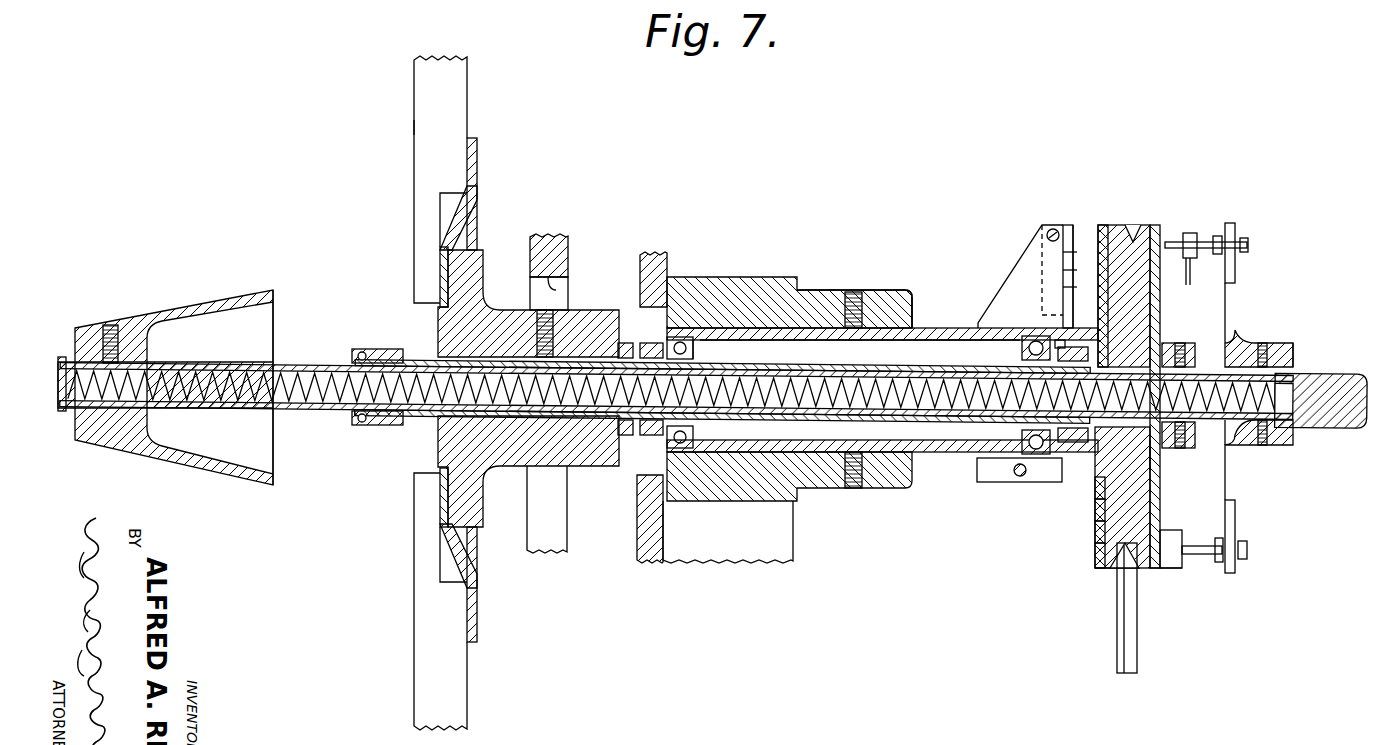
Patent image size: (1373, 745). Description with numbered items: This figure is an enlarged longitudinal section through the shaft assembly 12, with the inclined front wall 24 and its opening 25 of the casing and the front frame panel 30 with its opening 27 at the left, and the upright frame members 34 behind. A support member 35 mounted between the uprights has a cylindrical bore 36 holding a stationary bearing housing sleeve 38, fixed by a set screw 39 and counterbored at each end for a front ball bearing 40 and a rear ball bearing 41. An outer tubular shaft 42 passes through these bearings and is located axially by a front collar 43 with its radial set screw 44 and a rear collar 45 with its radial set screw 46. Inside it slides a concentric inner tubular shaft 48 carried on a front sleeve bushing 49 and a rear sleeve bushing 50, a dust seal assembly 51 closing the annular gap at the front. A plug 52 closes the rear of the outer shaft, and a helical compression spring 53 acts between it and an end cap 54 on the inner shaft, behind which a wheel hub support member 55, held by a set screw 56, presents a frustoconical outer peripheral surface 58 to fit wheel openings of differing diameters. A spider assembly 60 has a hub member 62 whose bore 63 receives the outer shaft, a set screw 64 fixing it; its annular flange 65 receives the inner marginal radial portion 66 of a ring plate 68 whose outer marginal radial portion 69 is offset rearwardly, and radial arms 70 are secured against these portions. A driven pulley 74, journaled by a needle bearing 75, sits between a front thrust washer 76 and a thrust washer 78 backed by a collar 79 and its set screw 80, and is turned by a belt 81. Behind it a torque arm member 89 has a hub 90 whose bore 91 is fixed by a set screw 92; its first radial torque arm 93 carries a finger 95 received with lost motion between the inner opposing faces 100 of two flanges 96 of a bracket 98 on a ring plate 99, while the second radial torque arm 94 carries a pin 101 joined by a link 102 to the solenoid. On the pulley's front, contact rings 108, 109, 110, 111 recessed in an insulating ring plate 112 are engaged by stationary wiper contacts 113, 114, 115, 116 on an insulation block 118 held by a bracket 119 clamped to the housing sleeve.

The shaft assembly 12 is at (895, 290).
The front wall 24 is at (560, 251).
The opening 25 is at (556, 290).
The opening 27 is at (650, 476).
The front frame panel 30 is at (648, 556).
The upright frame members 34 is at (792, 551).
The support member 35 is at (845, 292).
The cylindrical bore 36 is at (740, 330).
The bearing housing sleeve 38 is at (946, 329).
The set screw 39 is at (853, 300).
The front ball bearing 40 is at (702, 347).
The rear ball bearing 41 is at (1020, 355).
The outer tubular shaft 42 is at (846, 362).
The front collar 43 is at (626, 343).
The radial set screw 44 is at (646, 352).
The rear collar 45 is at (1085, 442).
The radial set screw 46 is at (1066, 352).
The inner tubular shaft 48 is at (312, 364).
The front sleeve bushing 49 is at (432, 414).
The rear sleeve bushing 50 is at (1010, 428).
The dust seal assembly 51 is at (357, 349).
The plug 52 is at (1352, 362).
The helical compression spring 53 is at (296, 400).
The end cap 54 is at (59, 357).
The wheel hub support member 55 is at (258, 294).
The set screw 56 is at (112, 325).
The outer peripheral surface 58 is at (188, 300).
The spider assembly 60 is at (414, 126).
The hub member 62 is at (603, 467).
The bore 63 is at (512, 434).
The set screw 64 is at (540, 345).
The annular flange 65 is at (484, 258).
The inner marginal radial portion 66 is at (443, 280).
The ring plate 68 is at (450, 222).
The outer marginal radial portion 69 is at (478, 152).
The radial arms 70 is at (456, 78).
The driven pulley 74 is at (1130, 499).
The needle bearing 75 is at (1157, 474).
The front thrust washer 76 is at (1092, 462).
The thrust washer 78 is at (1158, 460).
The collar 79 is at (1190, 443).
The set screw 80 is at (1180, 343).
The belt 81 is at (1124, 650).
The torque arm member 89 is at (1236, 305).
The hub 90 is at (1290, 341).
The bore 91 is at (1254, 452).
The set screw 92 is at (1264, 343).
The first radial torque arm 93 is at (1237, 526).
The second radial torque arm 94 is at (1232, 226).
The finger 95 is at (1203, 556).
The flanges 96 is at (1177, 572).
The bracket 98 is at (1158, 576).
The ring plate 99 is at (1152, 228).
The inner opposing faces 100 is at (1180, 536).
The pin 101 is at (1200, 238).
The link 102 is at (1192, 278).
The contact ring 108 is at (1098, 500).
The contact ring 109 is at (1098, 520).
The contact ring 110 is at (1098, 540).
The contact ring 111 is at (1098, 558).
The ring plate 112 is at (1100, 572).
The wiper contact 113 is at (1070, 287).
The wiper contact 114 is at (1070, 270).
The wiper contact 115 is at (1070, 252).
The wiper contact 116 is at (1095, 224).
The insulation block 118 is at (1068, 224).
The bracket 119 is at (1033, 230).